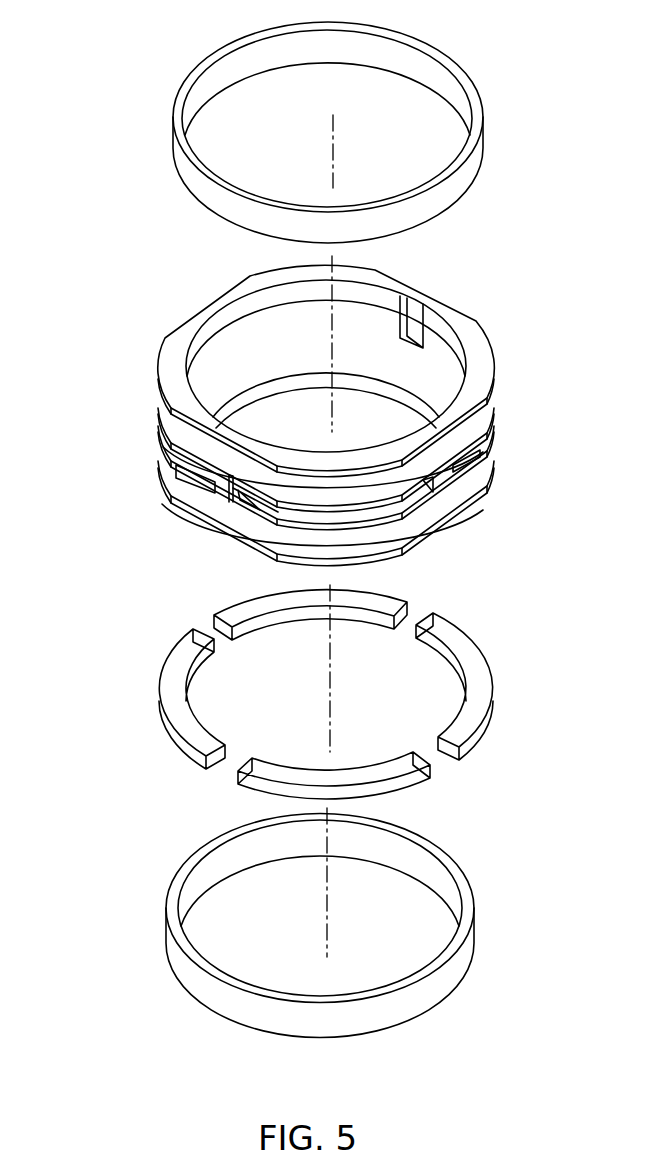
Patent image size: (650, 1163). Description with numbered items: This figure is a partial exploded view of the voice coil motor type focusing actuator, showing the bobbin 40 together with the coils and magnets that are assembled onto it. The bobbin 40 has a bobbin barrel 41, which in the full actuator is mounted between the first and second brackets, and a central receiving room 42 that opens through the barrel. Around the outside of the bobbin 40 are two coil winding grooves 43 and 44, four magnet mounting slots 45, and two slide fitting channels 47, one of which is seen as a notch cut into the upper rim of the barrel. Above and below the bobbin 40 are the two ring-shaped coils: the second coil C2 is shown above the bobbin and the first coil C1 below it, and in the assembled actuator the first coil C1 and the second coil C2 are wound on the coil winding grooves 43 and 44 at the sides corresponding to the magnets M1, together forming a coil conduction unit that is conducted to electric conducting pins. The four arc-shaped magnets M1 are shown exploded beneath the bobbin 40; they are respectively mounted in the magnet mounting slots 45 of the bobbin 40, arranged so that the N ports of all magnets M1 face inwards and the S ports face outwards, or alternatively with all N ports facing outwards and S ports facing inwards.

The first coil C1 is at (466, 982).
The second coil C2 is at (470, 88).
The magnets M1 is at (165, 727).
The bobbin 40 is at (324, 393).
The bobbin barrel 41 is at (160, 353).
The receiving room 42 is at (293, 408).
The coil winding groove 43 is at (437, 507).
The coil winding groove 44 is at (451, 432).
The magnet mounting slots 45 is at (178, 469).
The slide fitting channels 47 is at (413, 312).